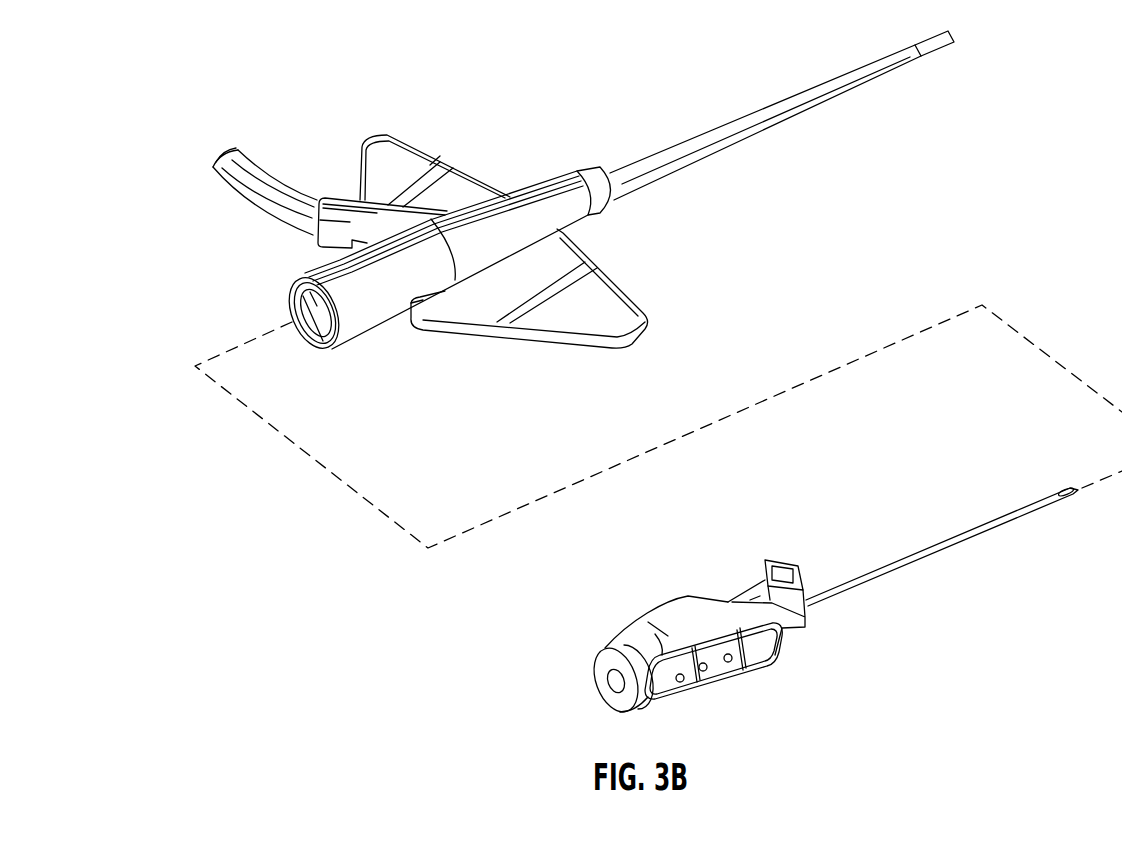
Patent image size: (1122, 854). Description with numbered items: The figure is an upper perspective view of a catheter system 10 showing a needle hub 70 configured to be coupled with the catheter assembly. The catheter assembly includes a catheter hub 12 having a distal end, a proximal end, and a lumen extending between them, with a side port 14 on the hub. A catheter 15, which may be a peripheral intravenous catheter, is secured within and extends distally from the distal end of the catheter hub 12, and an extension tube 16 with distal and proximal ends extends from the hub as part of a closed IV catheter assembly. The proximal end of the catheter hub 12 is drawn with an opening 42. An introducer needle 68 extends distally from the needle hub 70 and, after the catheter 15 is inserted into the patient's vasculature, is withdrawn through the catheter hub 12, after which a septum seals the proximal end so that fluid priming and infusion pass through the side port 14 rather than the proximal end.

The catheter system 10 is at (130, 82).
The catheter hub 12 is at (521, 180).
The side port 14 is at (340, 208).
The catheter 15 is at (868, 66).
The extension tube 16 is at (246, 173).
The proximal opening of catheter adapter 42 is at (356, 318).
The introducer needle 68 is at (970, 542).
The needle hub 70 is at (675, 612).